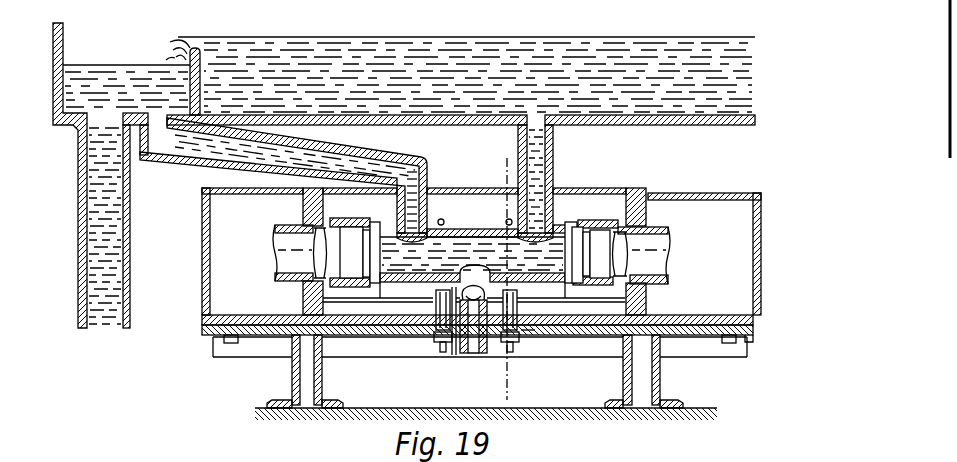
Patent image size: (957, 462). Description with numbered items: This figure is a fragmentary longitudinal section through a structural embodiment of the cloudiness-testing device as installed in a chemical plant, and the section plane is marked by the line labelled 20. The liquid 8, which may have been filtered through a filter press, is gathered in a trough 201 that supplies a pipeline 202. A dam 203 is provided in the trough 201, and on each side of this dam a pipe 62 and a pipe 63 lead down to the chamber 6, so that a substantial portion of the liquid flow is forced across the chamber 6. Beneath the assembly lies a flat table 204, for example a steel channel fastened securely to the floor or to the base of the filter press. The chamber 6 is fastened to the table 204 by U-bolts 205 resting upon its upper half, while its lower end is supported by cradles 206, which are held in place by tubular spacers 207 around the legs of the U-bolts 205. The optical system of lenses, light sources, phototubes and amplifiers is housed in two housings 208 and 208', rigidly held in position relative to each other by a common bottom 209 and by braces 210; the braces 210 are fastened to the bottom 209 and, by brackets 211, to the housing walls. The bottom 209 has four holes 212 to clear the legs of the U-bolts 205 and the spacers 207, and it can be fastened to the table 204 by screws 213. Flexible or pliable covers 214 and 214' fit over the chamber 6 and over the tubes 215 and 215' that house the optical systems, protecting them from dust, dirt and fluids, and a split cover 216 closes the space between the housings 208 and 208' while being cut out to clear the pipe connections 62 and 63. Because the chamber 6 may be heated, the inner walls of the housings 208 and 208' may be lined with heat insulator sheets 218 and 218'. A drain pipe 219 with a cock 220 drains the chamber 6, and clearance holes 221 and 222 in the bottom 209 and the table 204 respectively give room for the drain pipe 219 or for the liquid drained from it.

The trough 201 is at (63, 31).
The pipeline 202 is at (131, 196).
The dam 203 is at (170, 56).
The liquid 8 is at (248, 34).
The pipe 63 is at (381, 150).
The pipe 62 is at (553, 151).
The U-bolts 205 is at (498, 220).
The split cover 216 is at (567, 189).
The heat insulator sheet 218 is at (280, 198).
The heat insulator sheet 218' is at (657, 238).
The bracket 211 is at (303, 302).
The tube 215 is at (279, 240).
The tube 215' is at (668, 244).
The flexible cover 214 is at (349, 240).
The flexible cover 214' is at (594, 239).
The chamber 6 is at (536, 284).
The drain pipe 219 is at (465, 354).
The cock 220 is at (437, 303).
The tubular spacer 207 is at (517, 301).
The cradle 206 is at (434, 285).
The brace 210 is at (352, 305).
The clearance hole 222 is at (456, 358).
The clearance hole 221 is at (457, 372).
The hole 212 is at (528, 333).
The bottom 209 is at (203, 320).
The table 204 is at (755, 330).
The screw 213 is at (230, 342).
The housing 208 is at (231, 251).
The housing 208' is at (729, 254).
The section line 20 is at (501, 171).